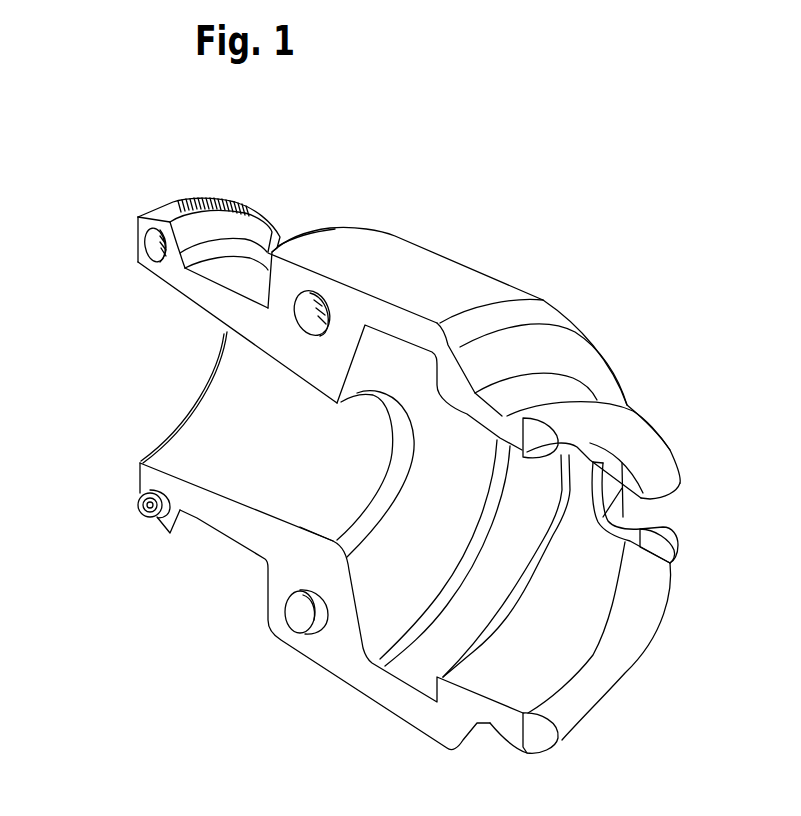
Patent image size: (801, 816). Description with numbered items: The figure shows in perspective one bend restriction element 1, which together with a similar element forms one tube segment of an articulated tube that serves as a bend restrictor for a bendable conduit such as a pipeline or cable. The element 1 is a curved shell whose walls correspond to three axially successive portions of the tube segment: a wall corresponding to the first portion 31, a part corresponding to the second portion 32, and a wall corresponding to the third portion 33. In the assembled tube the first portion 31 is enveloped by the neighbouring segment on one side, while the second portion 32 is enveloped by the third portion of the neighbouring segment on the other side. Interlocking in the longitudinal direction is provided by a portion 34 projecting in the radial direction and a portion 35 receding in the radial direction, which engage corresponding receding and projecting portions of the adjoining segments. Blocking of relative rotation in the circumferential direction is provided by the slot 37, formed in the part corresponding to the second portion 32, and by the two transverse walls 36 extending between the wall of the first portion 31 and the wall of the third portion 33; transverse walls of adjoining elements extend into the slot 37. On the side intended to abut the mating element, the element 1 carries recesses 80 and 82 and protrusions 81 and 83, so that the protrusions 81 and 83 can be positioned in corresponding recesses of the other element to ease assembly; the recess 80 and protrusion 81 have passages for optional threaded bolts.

The bend restriction element 1 is at (541, 254).
The first portion 31 is at (236, 413).
The second portion 32 is at (592, 627).
The third portion 33 is at (429, 264).
The radially projecting portion 34 is at (175, 200).
The radially receding portion 35 is at (421, 651).
The transverse walls 36 is at (297, 274).
The slot 37 is at (669, 510).
The recess 80 is at (144, 247).
The protrusion 81 is at (146, 506).
The recess 82 is at (296, 318).
The protrusion 83 is at (297, 623).